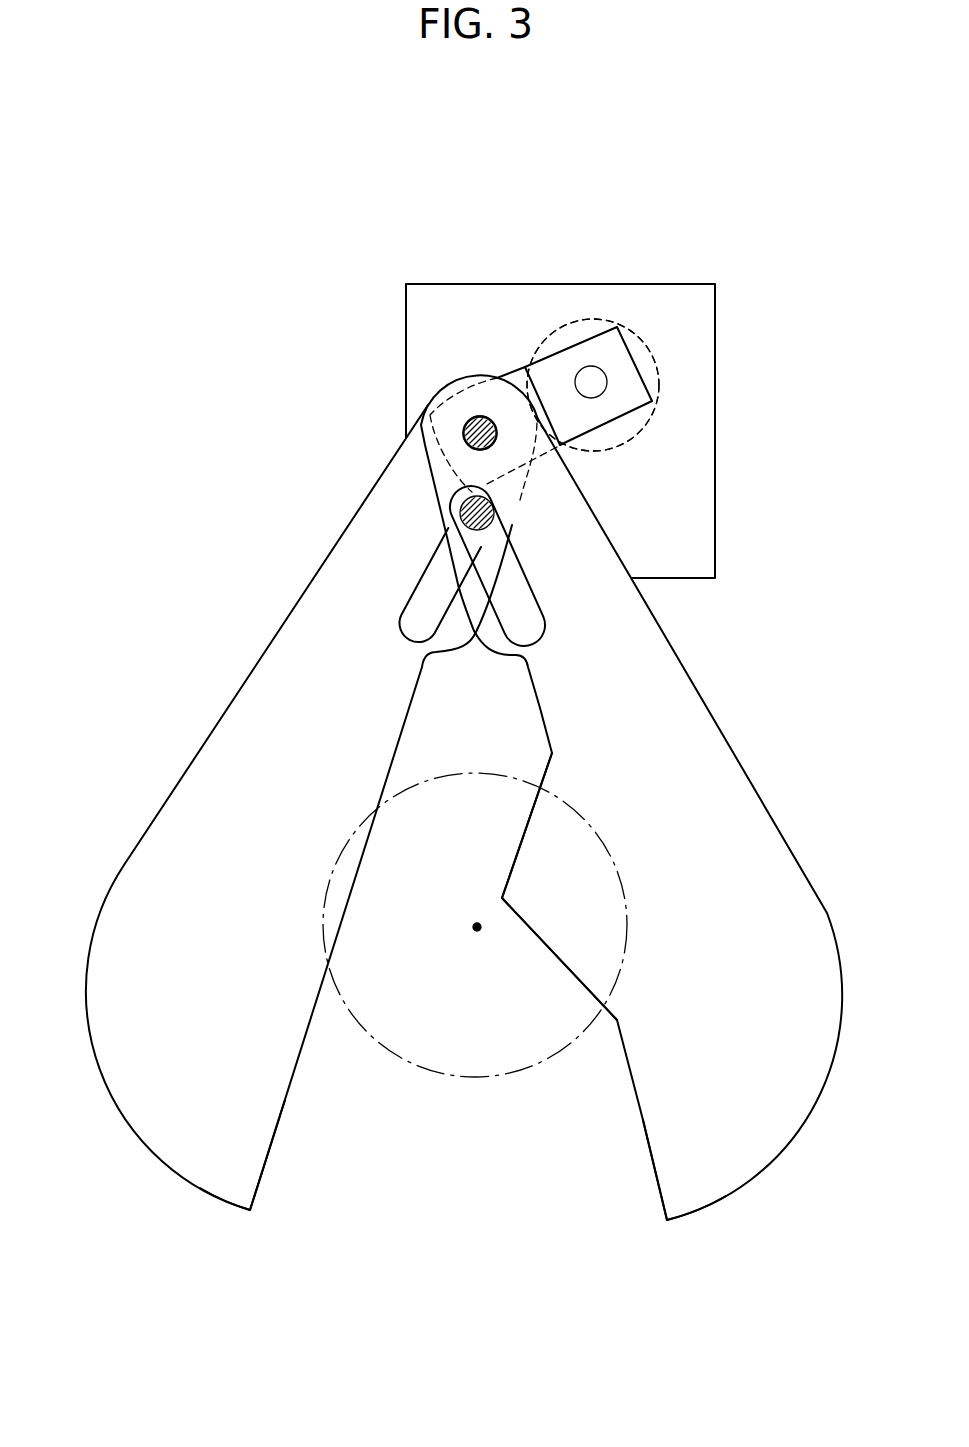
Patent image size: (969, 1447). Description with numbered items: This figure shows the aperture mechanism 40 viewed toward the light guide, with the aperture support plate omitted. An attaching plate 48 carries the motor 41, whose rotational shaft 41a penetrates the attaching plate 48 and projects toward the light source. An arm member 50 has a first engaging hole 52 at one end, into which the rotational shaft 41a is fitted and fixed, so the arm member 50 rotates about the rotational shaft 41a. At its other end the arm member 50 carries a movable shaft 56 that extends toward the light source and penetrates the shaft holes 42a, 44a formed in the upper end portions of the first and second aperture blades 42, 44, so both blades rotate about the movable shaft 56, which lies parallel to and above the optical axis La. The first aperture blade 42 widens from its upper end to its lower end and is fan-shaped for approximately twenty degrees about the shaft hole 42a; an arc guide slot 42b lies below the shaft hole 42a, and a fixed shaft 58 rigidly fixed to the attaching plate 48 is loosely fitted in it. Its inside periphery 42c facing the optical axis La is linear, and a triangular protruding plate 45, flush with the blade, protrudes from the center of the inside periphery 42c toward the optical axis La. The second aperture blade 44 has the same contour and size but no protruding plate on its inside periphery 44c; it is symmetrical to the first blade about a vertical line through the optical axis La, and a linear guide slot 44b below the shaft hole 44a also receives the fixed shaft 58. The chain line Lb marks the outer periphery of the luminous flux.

The aperture mechanism 40 is at (200, 468).
The motor 41 is at (595, 450).
The rotational shaft 41a is at (602, 393).
The first aperture blade 42 is at (725, 835).
The shaft hole 42a is at (482, 428).
The shaft hole 44a is at (510, 336).
The arc guide slot 42b is at (537, 627).
The inside periphery 42c is at (648, 1148).
The second aperture blade 44 is at (212, 812).
The linear guide slot 44b is at (399, 625).
The inside periphery 44c is at (270, 1148).
The protruding plate 45 is at (560, 915).
The attaching plate 48 is at (673, 524).
The arm member 50 is at (623, 368).
The first engaging hole 52 is at (588, 366).
The movable shaft 56 is at (464, 436).
The fixed shaft 58 is at (458, 503).
The optical axis La is at (477, 932).
The outer periphery of the luminous flux Lb is at (380, 1058).